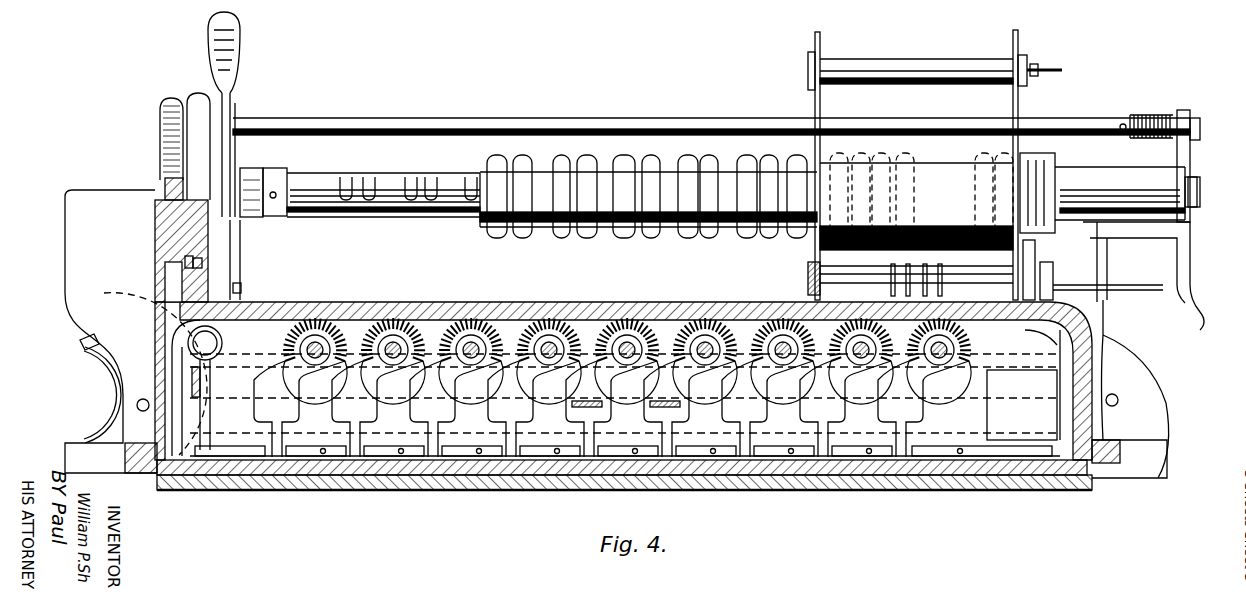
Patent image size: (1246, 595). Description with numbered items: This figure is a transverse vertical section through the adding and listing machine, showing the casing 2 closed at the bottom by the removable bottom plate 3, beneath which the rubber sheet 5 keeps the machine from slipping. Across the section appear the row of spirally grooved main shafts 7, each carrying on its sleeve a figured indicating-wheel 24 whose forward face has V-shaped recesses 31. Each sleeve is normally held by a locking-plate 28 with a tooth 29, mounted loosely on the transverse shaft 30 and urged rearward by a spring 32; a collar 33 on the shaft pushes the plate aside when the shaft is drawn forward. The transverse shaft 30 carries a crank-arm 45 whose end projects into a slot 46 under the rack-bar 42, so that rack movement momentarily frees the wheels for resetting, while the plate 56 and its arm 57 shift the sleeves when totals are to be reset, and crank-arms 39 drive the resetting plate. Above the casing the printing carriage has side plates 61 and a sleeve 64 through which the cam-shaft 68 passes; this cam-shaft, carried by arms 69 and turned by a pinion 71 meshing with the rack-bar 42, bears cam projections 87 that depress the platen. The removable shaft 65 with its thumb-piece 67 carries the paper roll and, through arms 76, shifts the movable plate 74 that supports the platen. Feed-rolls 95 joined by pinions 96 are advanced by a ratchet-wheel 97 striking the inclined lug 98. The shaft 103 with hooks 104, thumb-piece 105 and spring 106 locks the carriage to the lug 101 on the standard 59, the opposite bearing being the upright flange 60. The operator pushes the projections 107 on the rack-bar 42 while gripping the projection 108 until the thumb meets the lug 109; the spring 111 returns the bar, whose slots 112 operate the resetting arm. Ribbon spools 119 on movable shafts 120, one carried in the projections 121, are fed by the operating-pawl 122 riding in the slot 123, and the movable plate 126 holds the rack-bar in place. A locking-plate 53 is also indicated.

The casing 2 is at (427, 330).
The bottom plate 3 is at (500, 463).
The rubber sheet 5 is at (562, 483).
The main shaft 7 is at (405, 372).
The indicating-wheel 24 is at (335, 338).
The locking-plate 28 is at (313, 397).
The tooth 29 is at (735, 360).
The transverse shaft 30 is at (1012, 443).
The recesses 31 is at (322, 340).
The spring 32 is at (318, 453).
The collar 33 is at (335, 359).
The crank-arm 39 is at (242, 286).
The rack-bar 42 is at (165, 228).
The crank-arm 45 is at (176, 408).
The slot 46 is at (94, 344).
The special key lever 53 is at (650, 409).
The plate 56 is at (640, 404).
The arm 57 is at (192, 380).
The standard 59 is at (1178, 300).
The upright flange 60 is at (204, 265).
The side plates 61 is at (812, 100).
The sleeve 64 is at (1002, 201).
The removable shaft 65 is at (890, 63).
The thumb-piece 67 is at (1062, 68).
The cam-shaft 68 is at (625, 238).
The arms 69 is at (237, 110).
The pinion 71 is at (160, 185).
The movable plate 74 is at (1108, 275).
The arms 76 is at (822, 97).
The cam projections 87 is at (370, 152).
The feed-rolls 95 is at (935, 285).
The pinions 96 is at (808, 278).
The ratchet-wheel 97 is at (1035, 256).
The inclined lug 98 is at (1040, 340).
The lug 101 is at (1200, 185).
The shaft 103 is at (1090, 125).
The hooks 104 is at (230, 217).
The thumb-piece 105 is at (238, 55).
The spring 106 is at (1180, 112).
The projections 107 is at (160, 123).
The projection 108 is at (111, 331).
The lug 109 is at (200, 100).
The spring 111 is at (260, 260).
The slots 112 is at (195, 262).
The spools 119 is at (100, 392).
The movable shafts 120 is at (137, 406).
The projections 121 is at (1129, 453).
The operating-pawl 122 is at (82, 345).
The slot 123 is at (157, 247).
The movable plate 126 is at (160, 340).